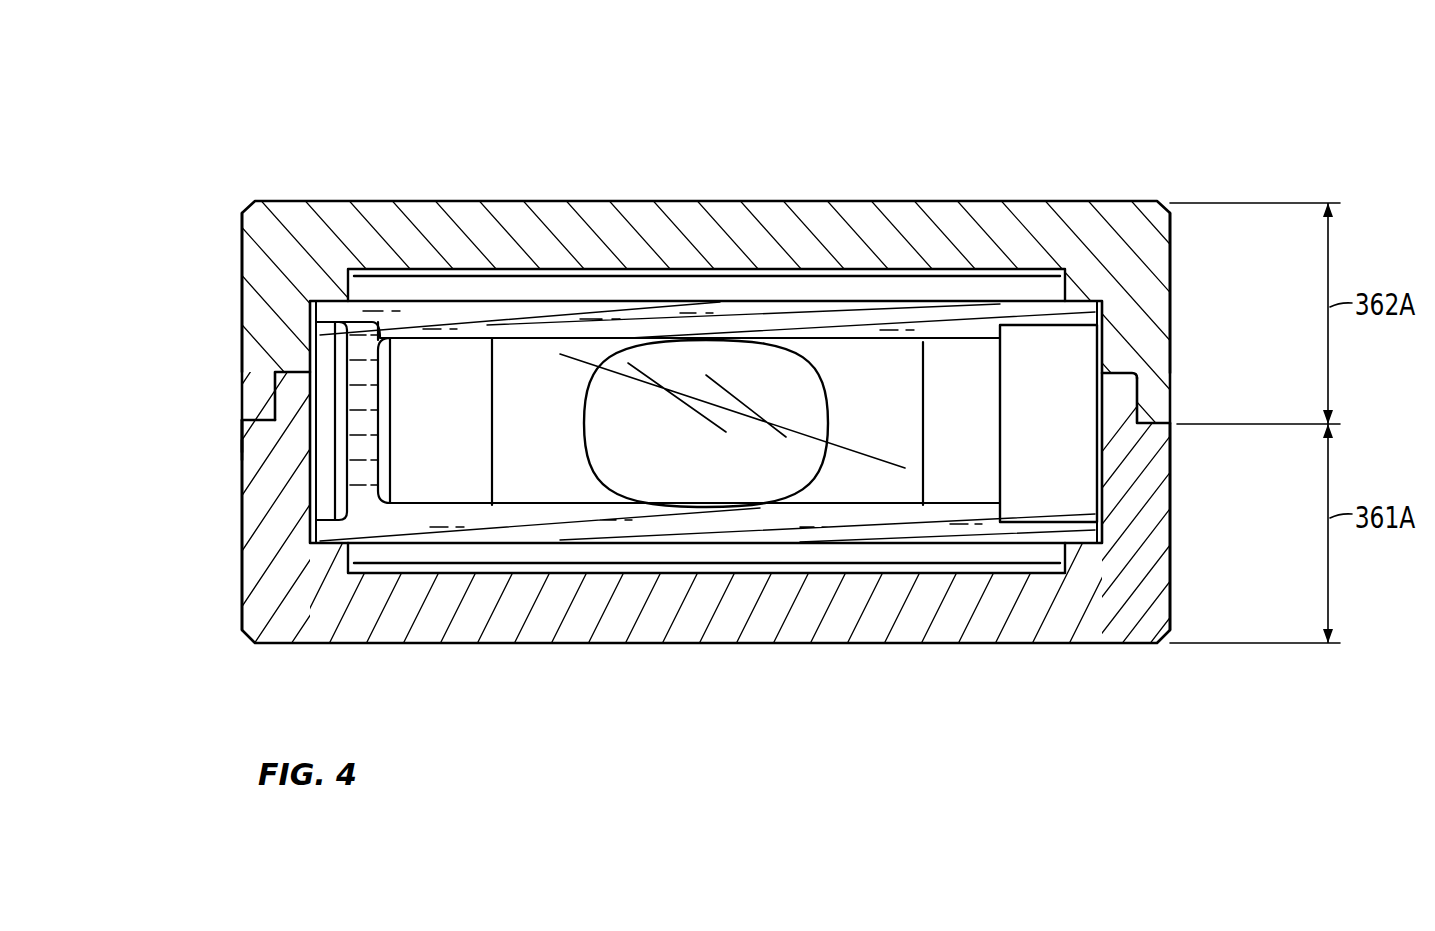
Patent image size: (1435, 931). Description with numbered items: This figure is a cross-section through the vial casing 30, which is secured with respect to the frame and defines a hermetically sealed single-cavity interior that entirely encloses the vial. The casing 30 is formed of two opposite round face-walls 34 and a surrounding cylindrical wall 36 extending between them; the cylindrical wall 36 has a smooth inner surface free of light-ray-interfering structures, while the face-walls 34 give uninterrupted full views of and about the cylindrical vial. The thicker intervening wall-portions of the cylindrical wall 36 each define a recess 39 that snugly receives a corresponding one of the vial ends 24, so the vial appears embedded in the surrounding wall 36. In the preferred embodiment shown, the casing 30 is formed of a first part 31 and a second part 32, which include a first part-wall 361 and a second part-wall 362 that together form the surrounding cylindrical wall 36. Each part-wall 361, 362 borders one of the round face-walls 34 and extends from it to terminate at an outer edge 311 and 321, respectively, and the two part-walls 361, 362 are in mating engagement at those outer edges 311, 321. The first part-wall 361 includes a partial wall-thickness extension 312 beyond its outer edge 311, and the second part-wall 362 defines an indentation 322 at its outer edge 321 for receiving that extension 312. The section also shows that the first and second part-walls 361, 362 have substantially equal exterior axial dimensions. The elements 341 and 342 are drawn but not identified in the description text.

The vial casing 30 is at (1042, 125).
The first part 31 is at (857, 612).
The second part 32 is at (820, 222).
The round face-walls 34 is at (640, 235).
The surrounding cylindrical wall 36 is at (318, 472).
The recess 39 is at (310, 493).
The vial ends 24 is at (325, 468).
The outer edge 311 is at (252, 405).
The partial wall-thickness extension 312 is at (240, 447).
The outer edge 321 is at (236, 432).
The indentation 322 is at (305, 360).
The lower lining plate 341 is at (1030, 645).
The upper lining plate 342 is at (515, 200).
The first part-wall 361 is at (258, 560).
The second part-wall 362 is at (282, 320).